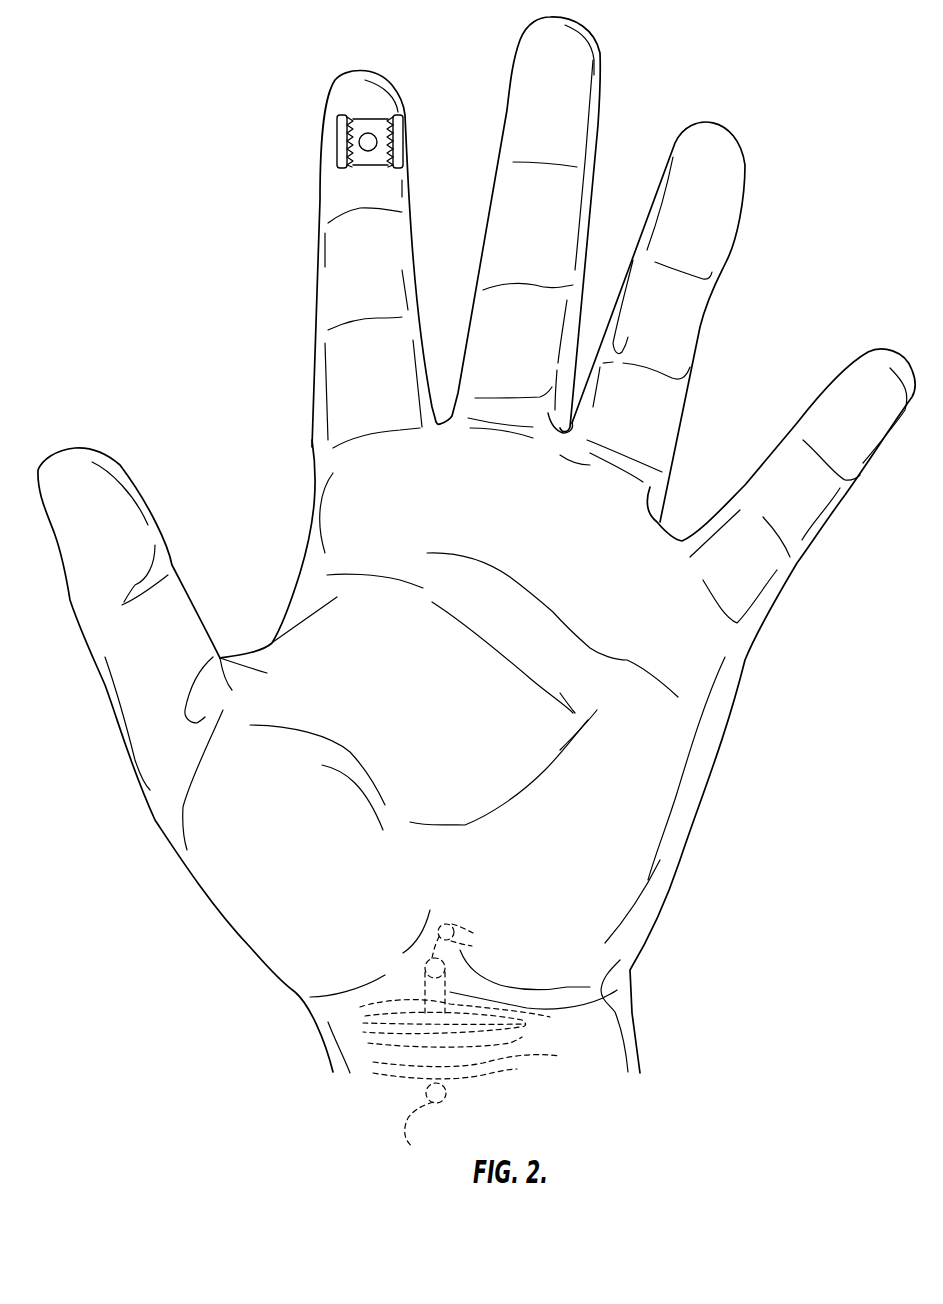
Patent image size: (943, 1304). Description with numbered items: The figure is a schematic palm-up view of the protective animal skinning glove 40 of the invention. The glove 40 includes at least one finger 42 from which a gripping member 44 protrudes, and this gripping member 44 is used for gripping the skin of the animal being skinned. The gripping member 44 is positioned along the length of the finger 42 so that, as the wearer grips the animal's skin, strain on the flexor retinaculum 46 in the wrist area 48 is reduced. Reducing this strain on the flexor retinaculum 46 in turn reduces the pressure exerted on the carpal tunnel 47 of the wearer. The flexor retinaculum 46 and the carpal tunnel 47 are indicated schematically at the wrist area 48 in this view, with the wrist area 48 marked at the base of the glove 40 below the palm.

The protective animal skinning glove 40 is at (808, 289).
The finger 42 is at (358, 58).
The gripping member 44 is at (325, 138).
The flexor retinaculum 46 is at (352, 1043).
The carpal tunnel 47 is at (447, 980).
The wrist area 48 is at (677, 938).